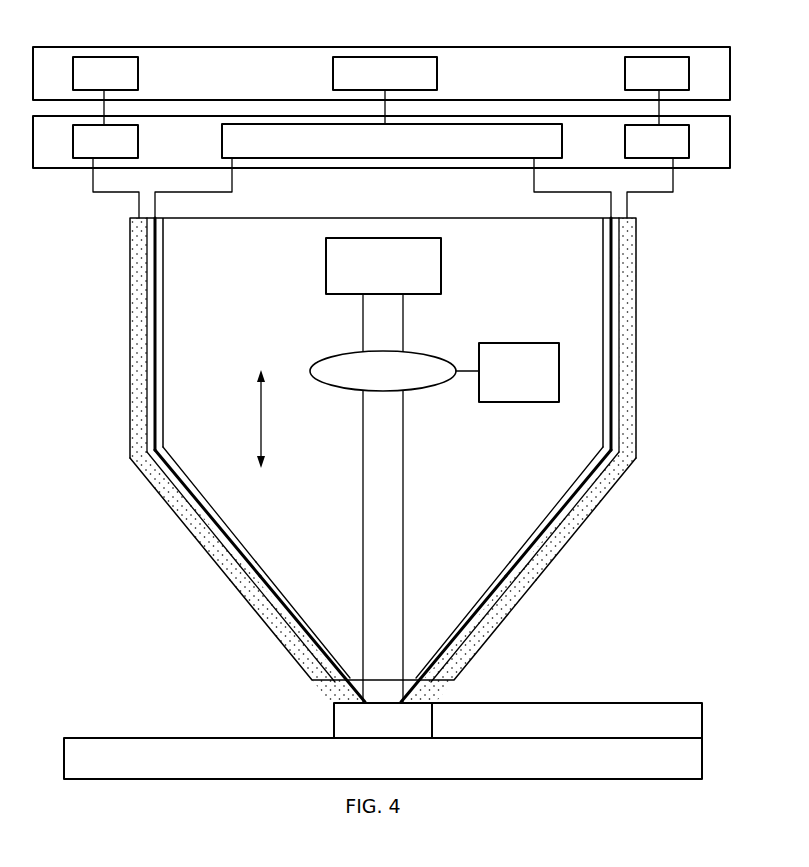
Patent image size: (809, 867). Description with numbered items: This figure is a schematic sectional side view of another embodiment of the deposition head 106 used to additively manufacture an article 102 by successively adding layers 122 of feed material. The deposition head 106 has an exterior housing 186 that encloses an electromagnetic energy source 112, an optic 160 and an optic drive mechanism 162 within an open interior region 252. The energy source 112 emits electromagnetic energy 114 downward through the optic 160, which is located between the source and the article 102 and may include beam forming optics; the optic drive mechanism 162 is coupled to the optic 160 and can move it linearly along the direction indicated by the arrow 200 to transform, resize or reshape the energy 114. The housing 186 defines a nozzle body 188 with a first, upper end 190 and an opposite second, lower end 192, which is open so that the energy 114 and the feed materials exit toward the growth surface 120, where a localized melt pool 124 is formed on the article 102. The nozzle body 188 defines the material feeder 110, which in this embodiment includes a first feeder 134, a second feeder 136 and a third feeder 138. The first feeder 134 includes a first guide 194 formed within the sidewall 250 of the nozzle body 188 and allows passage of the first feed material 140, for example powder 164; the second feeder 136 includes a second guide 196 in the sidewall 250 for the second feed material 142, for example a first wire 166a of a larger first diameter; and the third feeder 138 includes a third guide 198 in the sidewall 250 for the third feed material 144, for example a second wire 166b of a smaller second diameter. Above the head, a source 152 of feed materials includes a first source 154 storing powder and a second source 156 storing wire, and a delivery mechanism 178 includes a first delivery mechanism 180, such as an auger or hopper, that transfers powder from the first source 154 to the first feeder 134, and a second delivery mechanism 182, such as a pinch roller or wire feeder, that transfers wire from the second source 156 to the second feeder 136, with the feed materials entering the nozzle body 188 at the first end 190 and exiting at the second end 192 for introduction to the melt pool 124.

The article 102 is at (706, 665).
The deposition head 106 is at (708, 296).
The material feeder 110 is at (130, 282).
The electromagnetic energy source 112 is at (396, 278).
The electromagnetic energy 114 is at (363, 325).
The growth surface 120 is at (603, 703).
The layers 122 is at (702, 720).
The melt pool 124 is at (334, 722).
The first feeder 134 is at (150, 483).
The second feeder 136 is at (272, 583).
The third feeder 138 is at (490, 583).
The first feed material 140 is at (200, 540).
The second feed material 142 is at (243, 557).
The third feed material 144 is at (520, 557).
The source of feed materials 152 is at (733, 82).
The first source 154 is at (118, 84).
The second source 156 is at (398, 84).
The optic 160 is at (338, 392).
The optic drive mechanism 162 is at (519, 343).
The powder 164 is at (242, 585).
The first wire 166a is at (228, 530).
The second wire 166b is at (538, 530).
The delivery mechanism 178 is at (733, 149).
The first delivery mechanism 180 is at (118, 152).
The second delivery mechanism 182 is at (398, 151).
The housing 186 is at (130, 240).
The nozzle body 188 is at (130, 322).
The first end 190 is at (650, 230).
The second end 192 is at (470, 688).
The first guide 194 is at (168, 505).
The second guide 196 is at (294, 606).
The third guide 198 is at (470, 606).
The arrow 200 is at (261, 415).
The sidewall 250 is at (130, 408).
The open interior region 252 is at (468, 298).